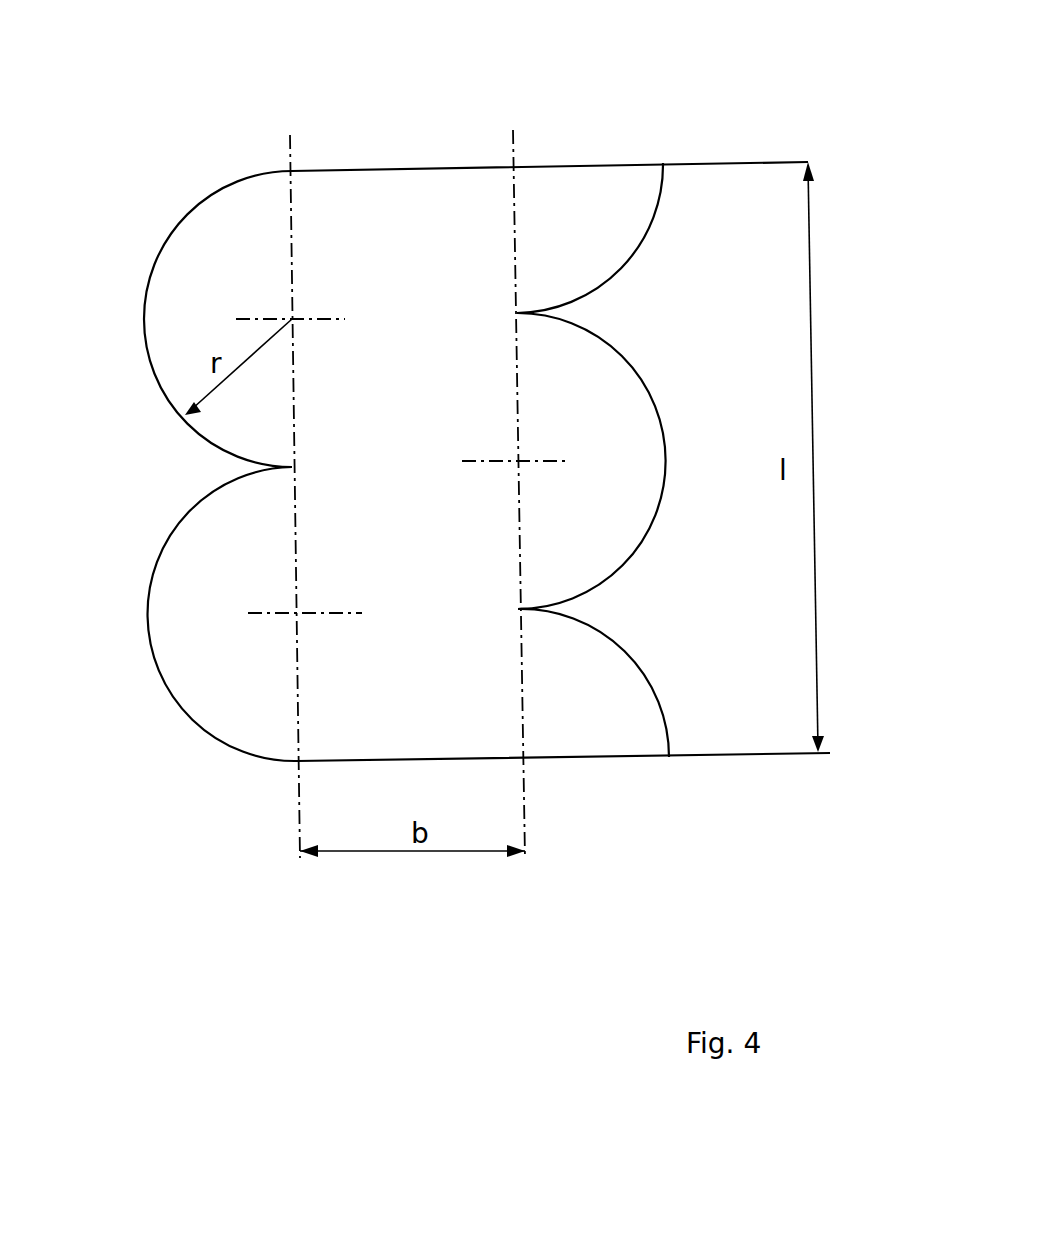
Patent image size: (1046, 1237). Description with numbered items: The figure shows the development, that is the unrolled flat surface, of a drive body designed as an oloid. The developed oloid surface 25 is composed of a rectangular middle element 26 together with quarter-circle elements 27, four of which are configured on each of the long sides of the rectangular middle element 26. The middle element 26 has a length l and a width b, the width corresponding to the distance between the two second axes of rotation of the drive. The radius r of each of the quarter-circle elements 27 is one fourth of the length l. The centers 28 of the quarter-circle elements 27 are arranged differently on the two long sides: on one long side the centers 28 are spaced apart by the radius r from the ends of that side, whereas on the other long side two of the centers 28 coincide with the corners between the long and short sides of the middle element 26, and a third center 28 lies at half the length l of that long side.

The developed oloid surface 25 is at (203, 165).
The rectangular middle element 26 is at (343, 713).
The quarter-circle elements 27 is at (575, 728).
The centers 28 is at (297, 613).